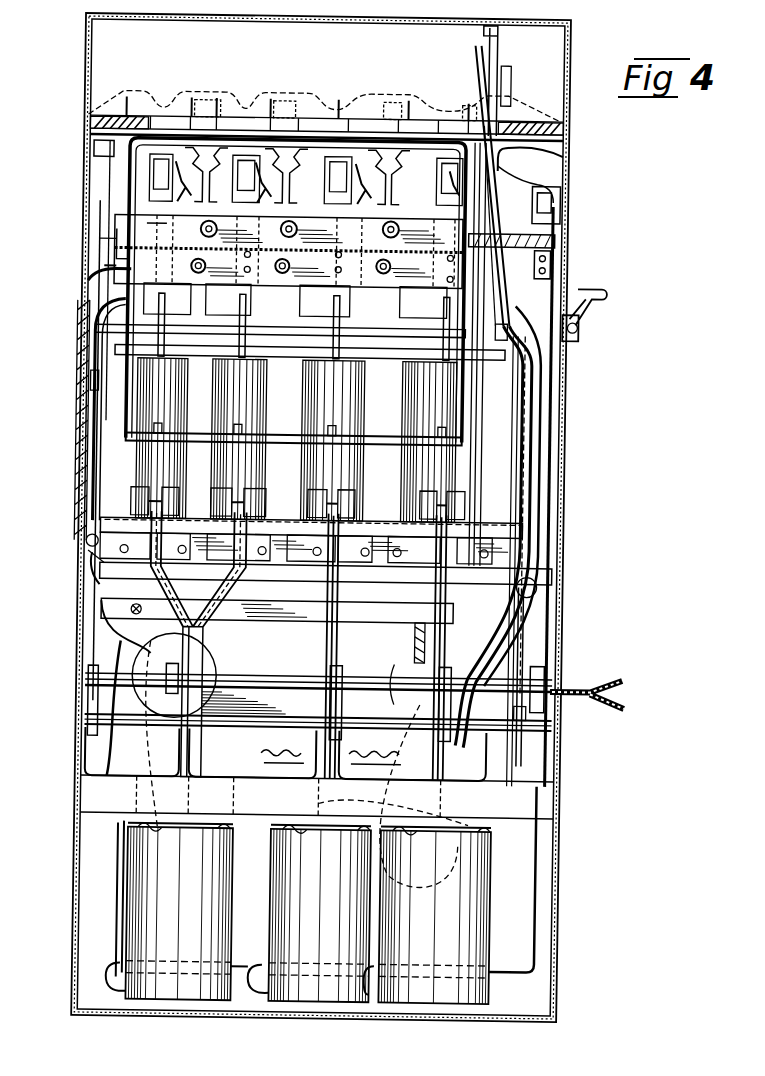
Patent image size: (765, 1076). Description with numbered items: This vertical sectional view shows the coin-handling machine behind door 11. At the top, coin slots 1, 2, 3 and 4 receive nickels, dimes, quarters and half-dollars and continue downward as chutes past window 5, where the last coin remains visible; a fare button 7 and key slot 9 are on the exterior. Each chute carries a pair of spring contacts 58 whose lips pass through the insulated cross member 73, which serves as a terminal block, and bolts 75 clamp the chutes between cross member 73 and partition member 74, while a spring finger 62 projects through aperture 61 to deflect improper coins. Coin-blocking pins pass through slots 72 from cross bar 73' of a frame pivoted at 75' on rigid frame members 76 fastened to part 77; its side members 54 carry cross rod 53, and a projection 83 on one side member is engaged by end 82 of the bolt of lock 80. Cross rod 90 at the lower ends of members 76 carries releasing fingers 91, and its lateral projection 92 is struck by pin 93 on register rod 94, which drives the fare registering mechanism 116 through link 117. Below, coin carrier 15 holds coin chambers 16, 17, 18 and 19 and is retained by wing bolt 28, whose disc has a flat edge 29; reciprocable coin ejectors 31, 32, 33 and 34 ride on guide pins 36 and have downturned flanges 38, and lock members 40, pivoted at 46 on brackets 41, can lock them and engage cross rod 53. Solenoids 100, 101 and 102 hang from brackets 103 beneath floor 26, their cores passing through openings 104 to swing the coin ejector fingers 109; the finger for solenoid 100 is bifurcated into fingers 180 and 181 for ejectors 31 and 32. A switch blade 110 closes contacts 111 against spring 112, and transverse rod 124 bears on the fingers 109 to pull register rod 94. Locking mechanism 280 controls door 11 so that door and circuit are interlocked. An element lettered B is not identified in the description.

The coin slot 1 is at (160, 100).
The coin slot 2 is at (250, 102).
The coin slot 3 is at (342, 104).
The coin slot 4 is at (452, 112).
The window 5 is at (150, 7).
The manually operable button 7 is at (64, 123).
The key slot 9 is at (524, 6).
The door 11 is at (112, 400).
The coin carrier 15 is at (122, 402).
The coin chamber 16 is at (162, 438).
The coin chamber 17 is at (239, 439).
The coin chamber 18 is at (333, 440).
The coin chamber 19 is at (429, 442).
The floor 26 is at (92, 808).
The wing bolt 28 is at (96, 546).
The flat edge 29 is at (100, 562).
The coin ejector 31 is at (194, 524).
The coin ejector 32 is at (272, 524).
The coin ejector 33 is at (362, 524).
The coin ejector 34 is at (470, 530).
The guide pin 36 is at (96, 586).
The flange 38 is at (110, 522).
The coin ejector lock member 40 is at (230, 458).
The bracket 41 is at (210, 486).
The pivot 46 is at (186, 504).
The cross rod 53 is at (422, 432).
The side member 54 is at (103, 240).
The spring contact 58 is at (306, 176).
The aperture 61 is at (152, 172).
The spring finger 62 is at (320, 212).
The slot 72 is at (180, 130).
The insulated cross member 73 is at (255, 330).
The cross bar 73' is at (460, 185).
The partition member 74 is at (118, 214).
The bolt 75 is at (275, 283).
The pivot 75' is at (70, 419).
The rigid frame member 76 is at (108, 268).
The part 77 is at (90, 120).
The lock 80 is at (552, 195).
The lock bolt end 82 is at (556, 246).
The projection 83 is at (560, 230).
The cross rod 90 is at (240, 367).
The releasing finger 91 is at (452, 332).
The lateral projection 92 is at (486, 364).
The pin 93 is at (498, 337).
The register rod 94 is at (530, 404).
The solenoid 100 is at (169, 910).
The solenoid 101 is at (300, 915).
The solenoid 102 is at (449, 894).
The bracket 103 is at (232, 826).
The opening 104 is at (208, 792).
The coin ejector finger 109 is at (240, 640).
The switch blade 110 is at (318, 640).
The contacts 111 is at (318, 652).
The spring 112 is at (420, 626).
The fare registering mechanism 116 is at (526, 81).
The link 117 is at (484, 46).
The transverse rod 124 is at (396, 677).
The finger 180 is at (175, 570).
The finger 181 is at (240, 574).
The locking mechanism 280 is at (96, 389).
The lever B is at (606, 322).